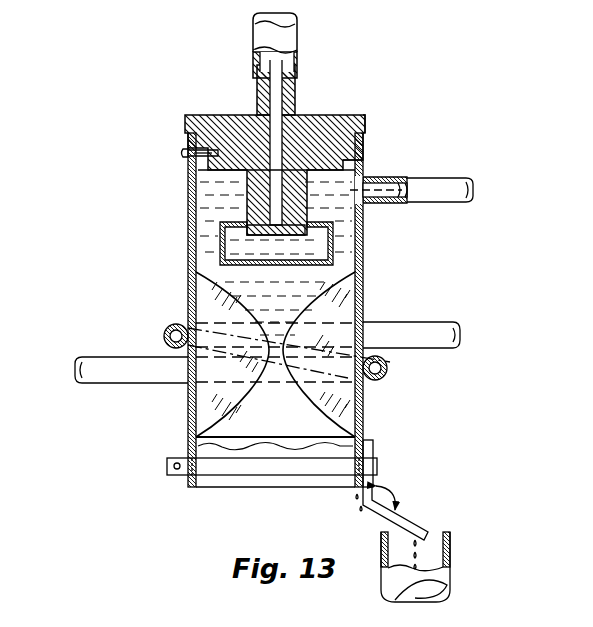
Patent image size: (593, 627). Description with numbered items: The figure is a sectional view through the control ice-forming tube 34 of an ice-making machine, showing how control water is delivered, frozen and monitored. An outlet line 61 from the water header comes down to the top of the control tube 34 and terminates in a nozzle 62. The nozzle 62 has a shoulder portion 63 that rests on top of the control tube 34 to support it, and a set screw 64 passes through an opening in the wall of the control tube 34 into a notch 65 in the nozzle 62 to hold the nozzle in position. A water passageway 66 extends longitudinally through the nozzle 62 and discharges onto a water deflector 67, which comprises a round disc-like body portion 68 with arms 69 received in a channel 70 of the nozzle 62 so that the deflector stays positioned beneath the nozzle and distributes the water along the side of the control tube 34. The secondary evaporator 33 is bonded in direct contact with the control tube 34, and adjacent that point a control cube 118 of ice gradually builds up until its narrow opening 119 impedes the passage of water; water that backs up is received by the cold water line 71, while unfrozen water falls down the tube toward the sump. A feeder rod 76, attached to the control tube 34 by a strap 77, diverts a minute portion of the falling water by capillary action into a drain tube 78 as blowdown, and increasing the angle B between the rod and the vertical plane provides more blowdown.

The secondary evaporator 33 is at (387, 370).
The control ice-forming tube 34 is at (362, 285).
The outlet line 61 is at (298, 31).
The nozzle 62 is at (306, 107).
The shoulder portion 63 is at (365, 133).
The set screw 64 is at (183, 153).
The notch 65 is at (357, 161).
The water passageway 66 is at (276, 86).
The water deflector 67 is at (219, 239).
The body portion 68 is at (267, 263).
The arms 69 is at (335, 248).
The channel 70 is at (310, 220).
The cold water line 71 is at (447, 178).
The feeder rod 76 is at (400, 524).
The strap 77 is at (260, 468).
The drain tube 78 is at (450, 556).
The control cube 118 is at (340, 317).
The narrow opening 119 is at (284, 337).
The angle "B" B is at (395, 495).